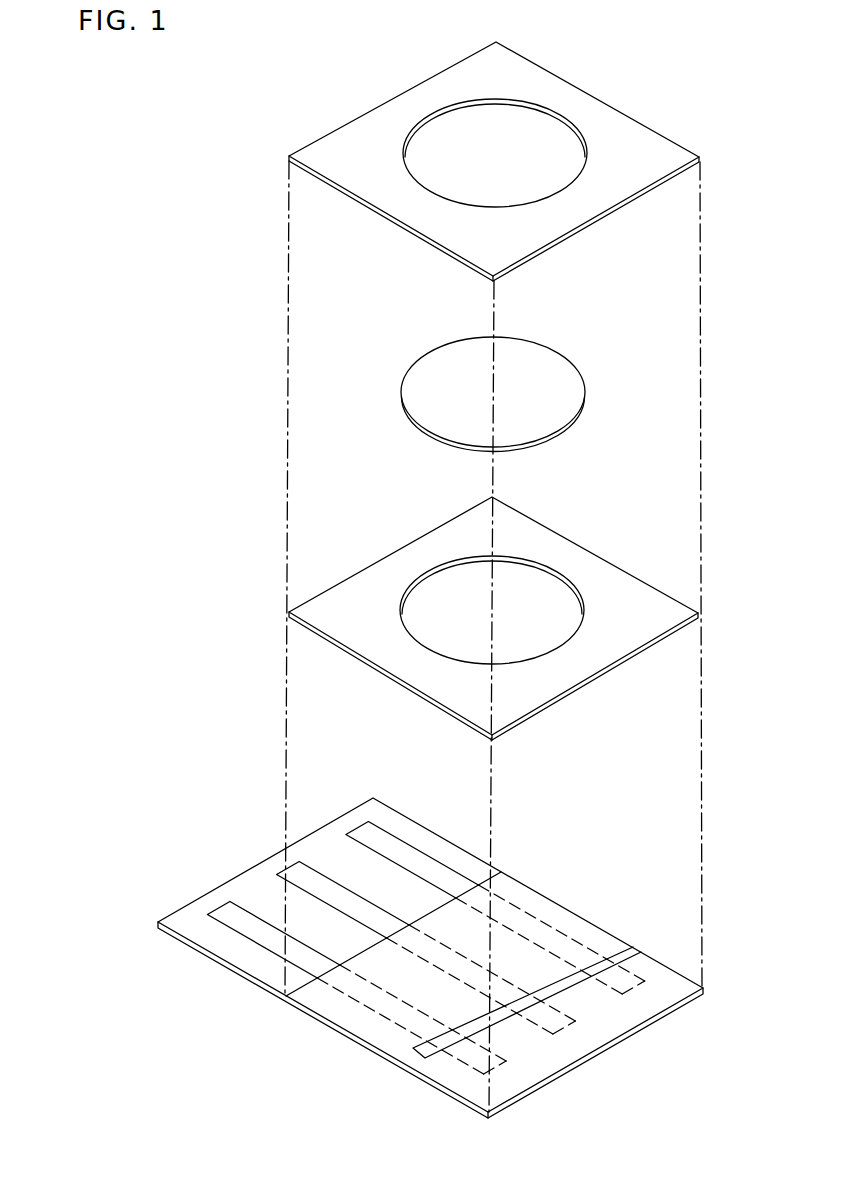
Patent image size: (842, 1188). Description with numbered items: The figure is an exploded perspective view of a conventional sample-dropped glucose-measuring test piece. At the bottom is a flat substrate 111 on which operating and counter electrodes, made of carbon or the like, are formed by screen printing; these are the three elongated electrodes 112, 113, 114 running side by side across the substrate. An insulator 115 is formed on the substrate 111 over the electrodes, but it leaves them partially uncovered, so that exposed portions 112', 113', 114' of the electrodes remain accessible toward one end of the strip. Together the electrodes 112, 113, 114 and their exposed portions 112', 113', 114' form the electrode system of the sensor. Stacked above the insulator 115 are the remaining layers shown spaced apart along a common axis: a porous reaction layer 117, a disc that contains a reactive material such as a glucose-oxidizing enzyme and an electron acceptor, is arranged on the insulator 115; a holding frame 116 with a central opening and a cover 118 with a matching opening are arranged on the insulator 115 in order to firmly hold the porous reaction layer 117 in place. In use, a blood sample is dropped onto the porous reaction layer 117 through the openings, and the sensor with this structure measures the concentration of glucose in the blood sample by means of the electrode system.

The substrate 111 is at (212, 960).
The electrode 112 is at (335, 960).
The electrode 113 is at (406, 920).
The electrode 114 is at (479, 882).
The exposed electrode portion 112' is at (437, 1089).
The exposed electrode portion 113' is at (560, 948).
The exposed electrode portion 114' is at (617, 937).
The insulator 115 is at (657, 977).
The holding frame 116 is at (403, 563).
The porous reaction layer 117 is at (557, 397).
The cover 118 is at (398, 98).